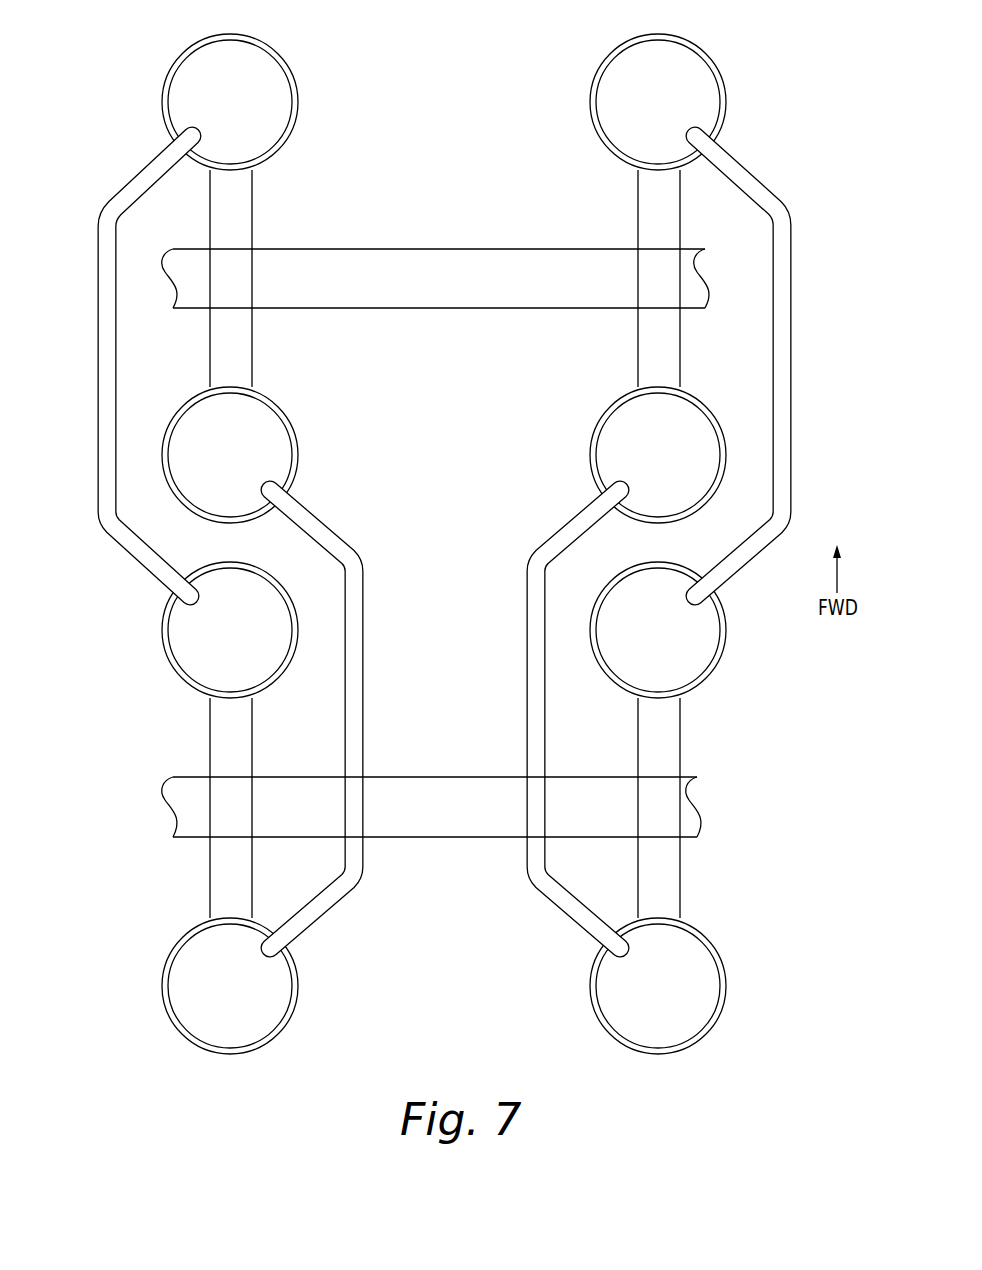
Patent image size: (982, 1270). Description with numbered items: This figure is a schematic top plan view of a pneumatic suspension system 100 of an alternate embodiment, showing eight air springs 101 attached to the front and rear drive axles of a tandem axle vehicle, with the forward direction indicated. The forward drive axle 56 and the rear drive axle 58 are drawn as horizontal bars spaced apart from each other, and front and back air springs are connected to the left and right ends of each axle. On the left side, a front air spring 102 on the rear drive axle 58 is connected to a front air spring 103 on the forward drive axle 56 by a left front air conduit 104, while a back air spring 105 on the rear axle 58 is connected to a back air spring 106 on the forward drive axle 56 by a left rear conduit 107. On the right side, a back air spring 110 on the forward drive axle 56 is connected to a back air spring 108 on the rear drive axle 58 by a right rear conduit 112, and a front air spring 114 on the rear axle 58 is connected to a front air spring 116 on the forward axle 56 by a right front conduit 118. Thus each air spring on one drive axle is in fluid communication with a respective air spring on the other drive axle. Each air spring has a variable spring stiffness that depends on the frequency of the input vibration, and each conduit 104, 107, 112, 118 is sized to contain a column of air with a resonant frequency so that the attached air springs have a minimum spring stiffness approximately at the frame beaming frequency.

The suspension system 100 is at (461, 551).
The air springs 101 is at (459, 996).
The front air spring 102 is at (163, 636).
The front air spring 103 is at (287, 65).
The left front air conduit 104 is at (97, 360).
The back air spring 105 is at (195, 973).
The back air spring 106 is at (163, 455).
The left rear conduit 107 is at (363, 618).
The back air spring 108 is at (722, 955).
The back air spring 110 is at (722, 430).
The right rear conduit 112 is at (527, 678).
The front air spring 114 is at (722, 656).
The front air spring 116 is at (716, 66).
The right front conduit 118 is at (793, 318).
The forward drive axle 56 is at (690, 254).
The rear drive axle 58 is at (685, 790).